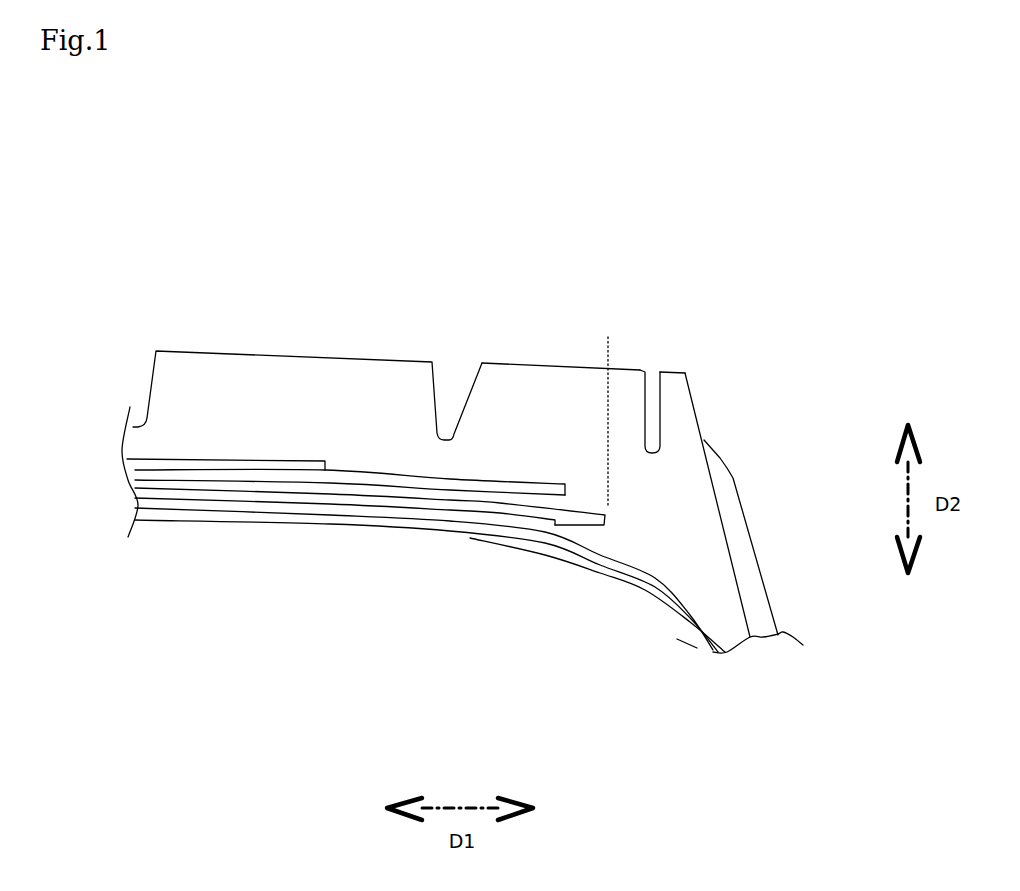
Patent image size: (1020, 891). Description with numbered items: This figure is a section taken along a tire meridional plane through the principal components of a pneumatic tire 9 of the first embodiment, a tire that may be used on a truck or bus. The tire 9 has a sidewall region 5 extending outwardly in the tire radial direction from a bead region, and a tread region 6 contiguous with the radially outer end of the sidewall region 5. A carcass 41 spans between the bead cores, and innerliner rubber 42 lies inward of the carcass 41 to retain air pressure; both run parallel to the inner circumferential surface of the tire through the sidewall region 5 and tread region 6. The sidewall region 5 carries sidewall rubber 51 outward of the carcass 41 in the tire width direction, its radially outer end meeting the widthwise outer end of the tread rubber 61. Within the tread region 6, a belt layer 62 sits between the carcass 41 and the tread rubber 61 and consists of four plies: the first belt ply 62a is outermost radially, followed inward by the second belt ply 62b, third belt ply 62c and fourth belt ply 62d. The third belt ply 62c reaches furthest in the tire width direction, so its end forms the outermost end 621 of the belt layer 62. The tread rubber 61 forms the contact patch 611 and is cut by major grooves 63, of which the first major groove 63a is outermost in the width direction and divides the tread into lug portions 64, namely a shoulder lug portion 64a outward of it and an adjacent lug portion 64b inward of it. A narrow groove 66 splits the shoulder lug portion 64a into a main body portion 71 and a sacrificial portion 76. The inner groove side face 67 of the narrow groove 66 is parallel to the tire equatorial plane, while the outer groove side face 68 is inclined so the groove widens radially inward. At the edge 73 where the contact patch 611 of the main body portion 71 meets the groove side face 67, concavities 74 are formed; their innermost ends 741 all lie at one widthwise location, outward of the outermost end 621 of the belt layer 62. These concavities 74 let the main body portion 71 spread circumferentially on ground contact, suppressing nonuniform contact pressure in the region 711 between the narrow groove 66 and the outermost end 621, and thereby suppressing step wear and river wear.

The tire 9 is at (750, 196).
The sidewall region 5 is at (817, 584).
The sidewall rubber 51 is at (755, 580).
The carcass 41 is at (567, 542).
The innerliner rubber 42 is at (607, 570).
The tread region 6 is at (514, 222).
The tread rubber 61 is at (461, 253).
The belt layer 62 is at (108, 460).
The first belt ply 62a is at (246, 465).
The second belt ply 62b is at (292, 479).
The third belt ply 62c is at (226, 478).
The fourth belt ply 62d is at (274, 497).
The outermost end in tire width direction of belt layer 621 is at (605, 515).
The major groove 63 is at (146, 426).
The first major groove 63a is at (456, 439).
The lug portion 64 is at (386, 359).
The shoulder lug portion 64a is at (487, 361).
The lug portion adjacent to shoulder lug portion 64b is at (297, 355).
The main body portion 71 is at (520, 371).
The contact patch 611 is at (550, 367).
The innermost end in tire width direction of concavity 741 is at (640, 374).
The region 711 is at (608, 358).
The edge 73 is at (645, 374).
The concavity 74 is at (660, 371).
The sacrificial portion 76 is at (682, 397).
The groove side face at narrow groove 67 is at (645, 428).
The groove side face at narrow groove 68 is at (660, 423).
The narrow groove 66 is at (665, 452).